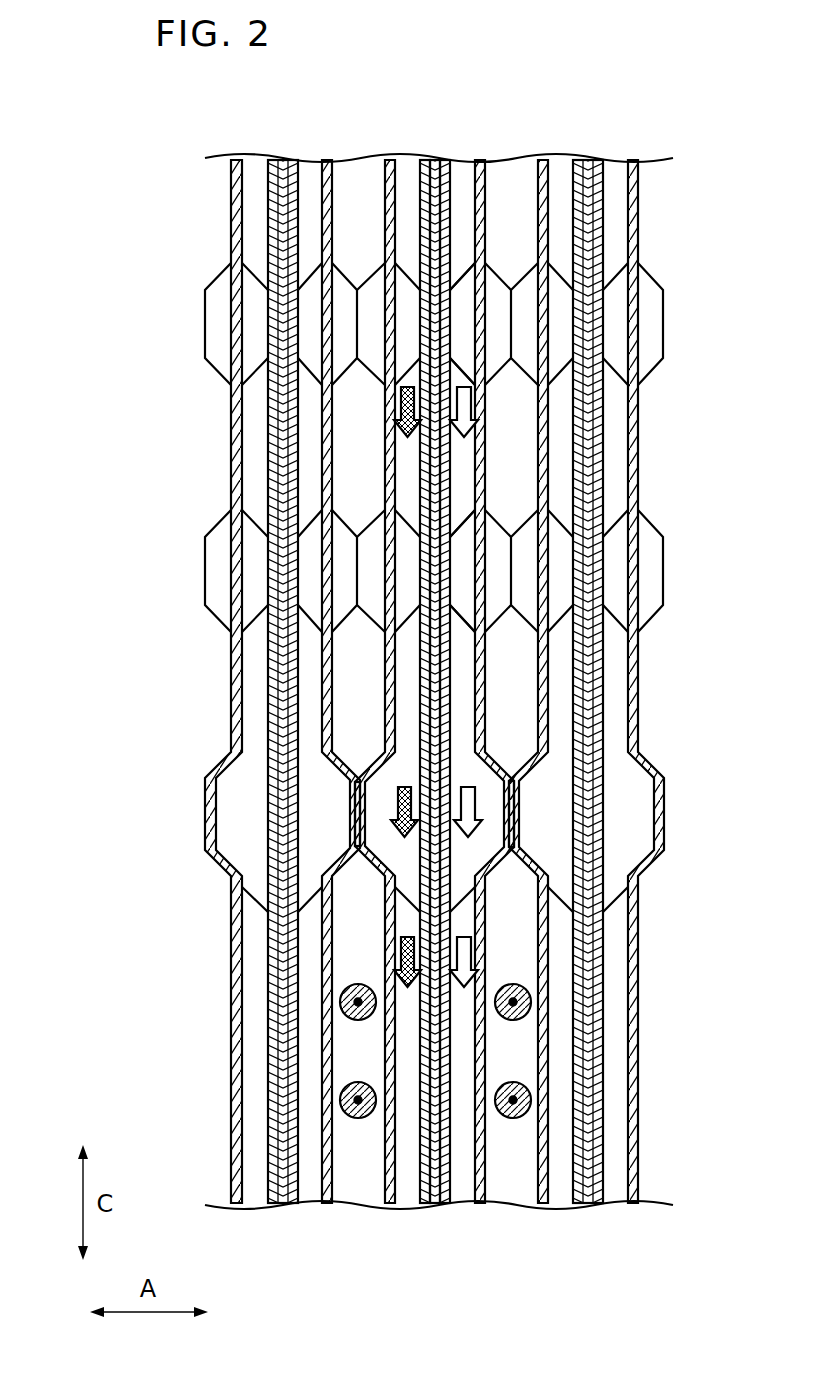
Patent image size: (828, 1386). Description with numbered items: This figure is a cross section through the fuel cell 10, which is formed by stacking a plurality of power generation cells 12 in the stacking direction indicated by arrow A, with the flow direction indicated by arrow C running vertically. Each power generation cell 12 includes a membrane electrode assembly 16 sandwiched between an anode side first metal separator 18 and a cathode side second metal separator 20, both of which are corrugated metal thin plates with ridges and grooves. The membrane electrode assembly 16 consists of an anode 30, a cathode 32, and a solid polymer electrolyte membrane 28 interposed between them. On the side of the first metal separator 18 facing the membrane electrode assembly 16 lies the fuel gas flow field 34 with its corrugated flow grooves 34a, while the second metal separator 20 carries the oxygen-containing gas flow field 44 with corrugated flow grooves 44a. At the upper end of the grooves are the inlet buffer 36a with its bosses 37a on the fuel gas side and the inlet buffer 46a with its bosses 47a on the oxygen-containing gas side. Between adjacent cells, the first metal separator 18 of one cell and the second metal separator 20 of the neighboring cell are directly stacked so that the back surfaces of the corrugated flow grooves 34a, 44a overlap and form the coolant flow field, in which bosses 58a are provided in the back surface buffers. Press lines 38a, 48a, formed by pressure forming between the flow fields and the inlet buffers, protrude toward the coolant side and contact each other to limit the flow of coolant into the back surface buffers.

The fuel cell 10 is at (665, 69).
The power generation cell 12 is at (431, 604).
The membrane electrode assembly 16 is at (433, 626).
The anode side first metal separator 18 is at (381, 203).
The cathode side second metal separator 20 is at (507, 626).
The solid polymer electrolyte membrane 28 is at (434, 162).
The anode 30 is at (420, 197).
The cathode 32 is at (464, 651).
The fuel gas flow field 34 is at (409, 1095).
The corrugated flow grooves 34a is at (408, 1037).
The inlet buffer 36a is at (410, 448).
The bosses 37a is at (410, 570).
The press line 38a is at (351, 810).
The oxygen-containing gas flow field 44 is at (460, 1090).
The corrugated flow grooves 44a is at (460, 1037).
The inlet buffer 46a is at (460, 448).
The bosses 47a is at (460, 570).
The press line 48a is at (515, 810).
The bosses 58a is at (343, 597).